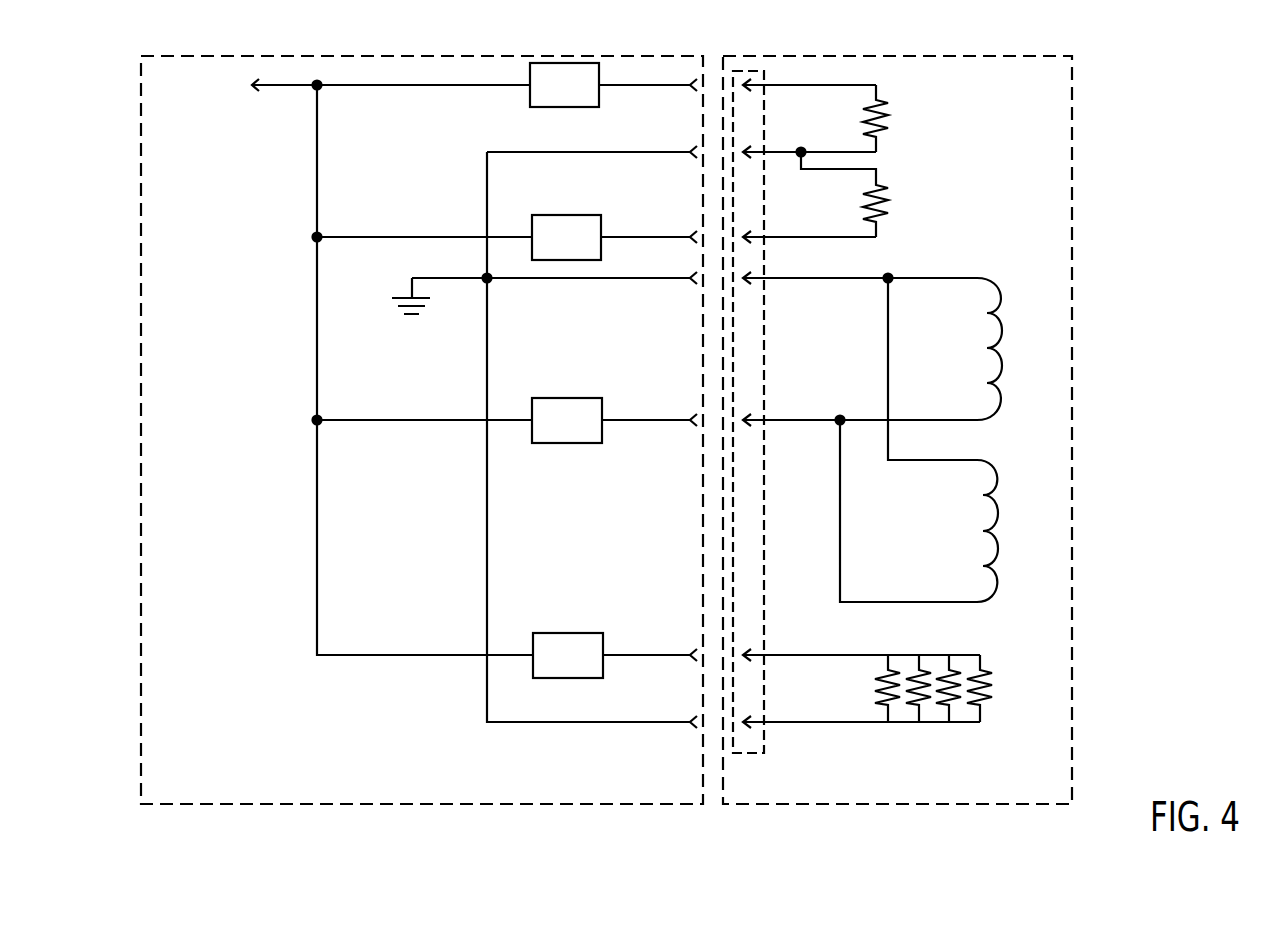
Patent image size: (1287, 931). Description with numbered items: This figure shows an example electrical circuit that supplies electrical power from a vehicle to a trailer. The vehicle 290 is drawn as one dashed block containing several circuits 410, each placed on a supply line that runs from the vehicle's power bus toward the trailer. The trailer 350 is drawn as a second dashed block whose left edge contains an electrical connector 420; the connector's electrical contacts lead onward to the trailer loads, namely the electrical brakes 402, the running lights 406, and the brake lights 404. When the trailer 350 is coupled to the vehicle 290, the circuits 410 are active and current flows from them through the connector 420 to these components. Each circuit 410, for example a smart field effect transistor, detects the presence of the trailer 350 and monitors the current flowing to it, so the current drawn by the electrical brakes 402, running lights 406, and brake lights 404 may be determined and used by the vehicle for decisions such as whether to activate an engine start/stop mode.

The vehicle 290 is at (140, 411).
The trailer 350 is at (1073, 232).
The electrical brakes 402 is at (999, 340).
The brake lights 404 is at (883, 135).
The running lights 406 is at (890, 707).
The circuits 410 is at (566, 370).
The electrical connector 420 is at (744, 754).